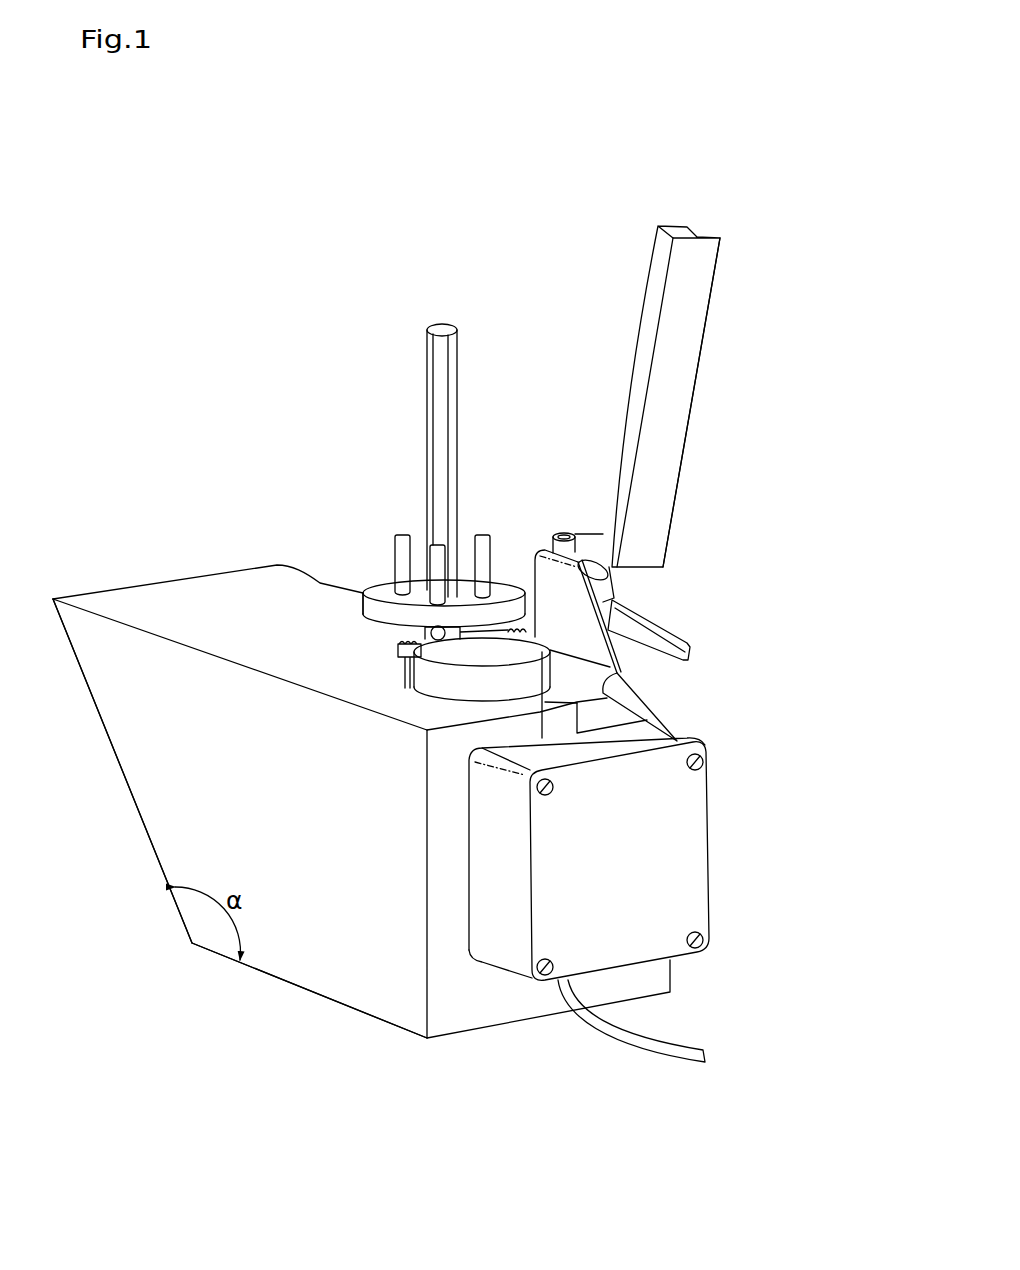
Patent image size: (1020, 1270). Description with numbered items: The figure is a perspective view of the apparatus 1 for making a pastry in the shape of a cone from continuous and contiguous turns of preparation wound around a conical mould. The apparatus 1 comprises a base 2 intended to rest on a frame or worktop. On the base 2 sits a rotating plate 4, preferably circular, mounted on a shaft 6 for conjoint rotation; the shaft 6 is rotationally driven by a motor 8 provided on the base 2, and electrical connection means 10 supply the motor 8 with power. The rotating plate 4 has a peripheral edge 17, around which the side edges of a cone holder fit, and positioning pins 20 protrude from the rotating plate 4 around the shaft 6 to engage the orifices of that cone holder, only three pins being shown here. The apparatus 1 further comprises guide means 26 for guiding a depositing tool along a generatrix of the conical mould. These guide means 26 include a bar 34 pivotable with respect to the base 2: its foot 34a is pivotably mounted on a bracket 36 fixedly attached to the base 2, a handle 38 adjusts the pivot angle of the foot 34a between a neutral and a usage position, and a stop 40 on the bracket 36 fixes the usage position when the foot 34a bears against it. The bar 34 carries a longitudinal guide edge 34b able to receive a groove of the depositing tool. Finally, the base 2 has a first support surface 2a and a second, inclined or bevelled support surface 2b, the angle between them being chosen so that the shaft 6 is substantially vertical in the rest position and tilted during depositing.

The apparatus 1 is at (178, 342).
The base 2 is at (353, 935).
The first support surface 2a is at (413, 1033).
The second support surface 2b is at (110, 747).
The rotating plate 4 is at (382, 593).
The shaft 6 is at (437, 343).
The motor 8 is at (480, 682).
The electrical connection means 10 is at (680, 880).
The peripheral edge 17 is at (363, 593).
The positioning pin 20 is at (402, 550).
The guide means 26 is at (748, 205).
The bar 34 is at (678, 385).
The foot 34a is at (598, 555).
The longitudinal guide edge 34b is at (708, 298).
The bracket 36 is at (593, 652).
The handle 38 is at (660, 640).
The stop 40 is at (564, 540).